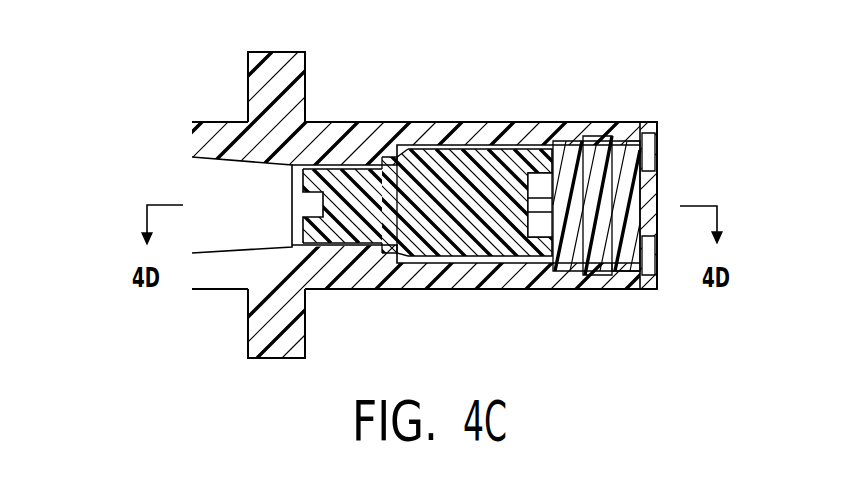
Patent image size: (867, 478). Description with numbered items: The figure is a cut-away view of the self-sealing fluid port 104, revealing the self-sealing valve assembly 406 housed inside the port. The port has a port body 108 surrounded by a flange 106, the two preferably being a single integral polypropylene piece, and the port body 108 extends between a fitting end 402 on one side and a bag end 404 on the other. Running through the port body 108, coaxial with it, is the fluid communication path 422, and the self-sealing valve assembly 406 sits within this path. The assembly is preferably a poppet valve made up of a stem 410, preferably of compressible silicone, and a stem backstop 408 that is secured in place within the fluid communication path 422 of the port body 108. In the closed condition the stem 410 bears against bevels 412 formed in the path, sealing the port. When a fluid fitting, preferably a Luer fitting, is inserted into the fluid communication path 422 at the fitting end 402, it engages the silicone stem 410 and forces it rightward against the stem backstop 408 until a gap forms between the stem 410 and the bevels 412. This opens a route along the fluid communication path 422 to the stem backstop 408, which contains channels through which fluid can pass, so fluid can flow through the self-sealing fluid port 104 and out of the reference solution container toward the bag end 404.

The self-sealing fluid port 104 is at (129, 125).
The flange 106 is at (250, 72).
The port body 108 is at (213, 120).
The fitting end 402 is at (213, 289).
The bag end 404 is at (628, 124).
The self-sealing valve assembly 406 is at (502, 168).
The stem backstop 408 is at (623, 258).
The stem 410 is at (432, 182).
The bevels 412 is at (392, 160).
The fluid communication path 422 is at (214, 188).